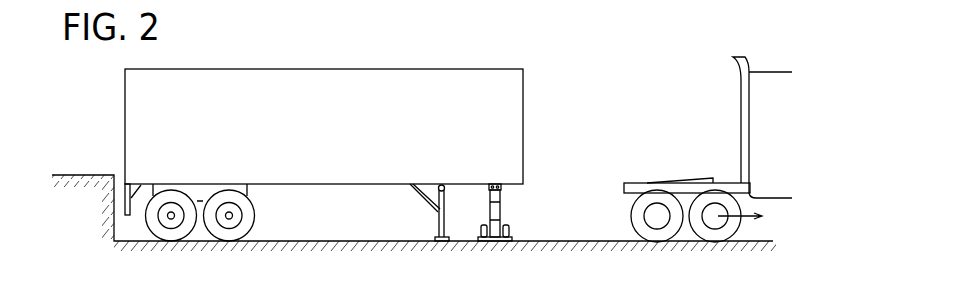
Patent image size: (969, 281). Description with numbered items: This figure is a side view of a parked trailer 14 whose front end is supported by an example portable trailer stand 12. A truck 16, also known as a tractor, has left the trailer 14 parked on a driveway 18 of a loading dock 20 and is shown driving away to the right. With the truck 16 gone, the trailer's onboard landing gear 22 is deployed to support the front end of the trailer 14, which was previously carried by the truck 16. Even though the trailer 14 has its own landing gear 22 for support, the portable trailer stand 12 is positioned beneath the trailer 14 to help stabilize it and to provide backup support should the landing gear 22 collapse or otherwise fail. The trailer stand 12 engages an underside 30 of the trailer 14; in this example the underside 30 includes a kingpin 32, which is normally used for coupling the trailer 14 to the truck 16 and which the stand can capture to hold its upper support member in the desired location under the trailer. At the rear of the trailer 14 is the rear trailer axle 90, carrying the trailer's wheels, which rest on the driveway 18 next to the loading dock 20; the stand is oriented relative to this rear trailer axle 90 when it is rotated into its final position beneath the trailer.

The portable trailer stand 12 is at (503, 214).
The trailer 14 is at (523, 118).
The truck 16 is at (741, 127).
The driveway 18 is at (600, 240).
The loading dock 20 is at (342, 209).
The landing gear 22 is at (437, 224).
The underside 30 is at (470, 186).
The kingpin 32 is at (501, 200).
The rear trailer axle 90 is at (233, 217).